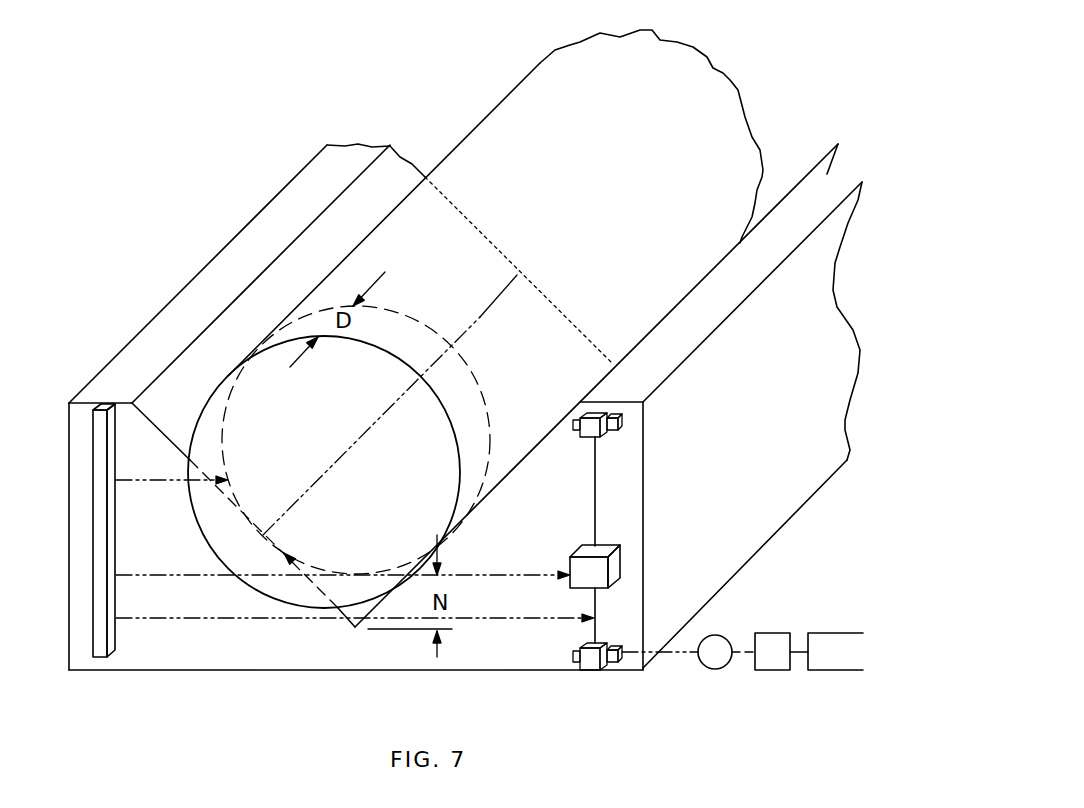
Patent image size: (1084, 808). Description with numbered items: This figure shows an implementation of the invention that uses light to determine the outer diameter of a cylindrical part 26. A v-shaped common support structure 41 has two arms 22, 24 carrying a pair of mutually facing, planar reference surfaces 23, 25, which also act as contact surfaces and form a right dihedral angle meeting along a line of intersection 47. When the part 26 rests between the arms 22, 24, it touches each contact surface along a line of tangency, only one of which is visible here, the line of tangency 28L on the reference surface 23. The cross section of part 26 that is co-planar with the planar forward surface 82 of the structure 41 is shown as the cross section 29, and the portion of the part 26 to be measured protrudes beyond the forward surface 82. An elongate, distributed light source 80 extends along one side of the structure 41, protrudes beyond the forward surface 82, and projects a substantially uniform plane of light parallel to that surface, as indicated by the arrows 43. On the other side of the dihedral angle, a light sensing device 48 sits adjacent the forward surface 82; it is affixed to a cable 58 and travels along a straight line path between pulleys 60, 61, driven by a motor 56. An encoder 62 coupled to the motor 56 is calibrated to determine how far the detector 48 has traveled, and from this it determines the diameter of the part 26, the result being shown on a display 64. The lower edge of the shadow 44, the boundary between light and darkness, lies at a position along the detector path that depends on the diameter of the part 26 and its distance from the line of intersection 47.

The arm 22 is at (348, 152).
The planar reference surface 23 is at (397, 173).
The arm 24 is at (832, 178).
The planar reference surface 25 is at (790, 191).
The part 26 is at (698, 77).
The line of tangency 28L is at (480, 317).
The cross section of part 29 is at (473, 372).
The v-shaped common support structure 41 is at (203, 672).
The arrows 43 is at (127, 480).
The lower edge of the shadow 44 is at (404, 573).
The line of intersection 47 is at (353, 630).
The light sensing device 48 is at (618, 558).
The motor 56 is at (727, 668).
The cable 58 is at (597, 495).
The pulley 60 is at (622, 421).
The pulley 61 is at (580, 648).
The encoder 62 is at (780, 672).
The display 64 is at (853, 672).
The distributed light source 80 is at (98, 545).
The planar forward surface 82 is at (80, 462).